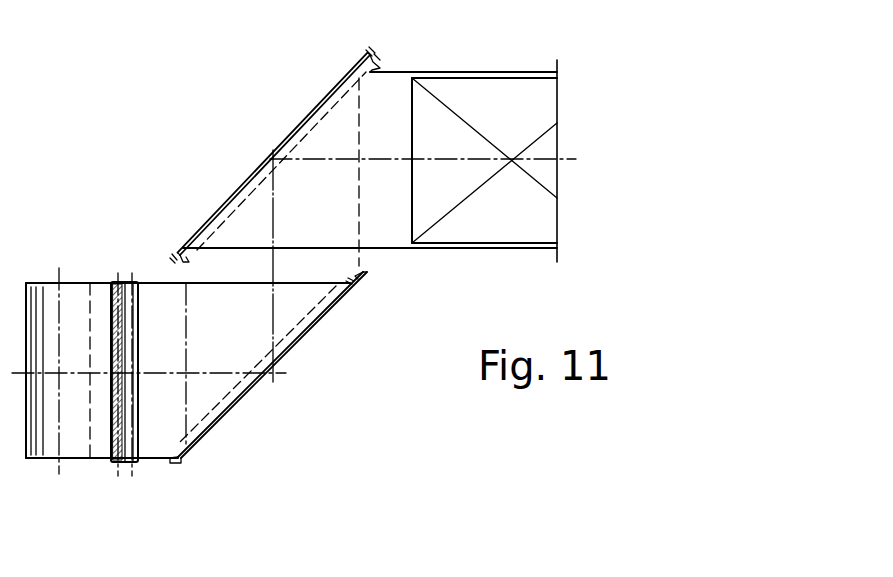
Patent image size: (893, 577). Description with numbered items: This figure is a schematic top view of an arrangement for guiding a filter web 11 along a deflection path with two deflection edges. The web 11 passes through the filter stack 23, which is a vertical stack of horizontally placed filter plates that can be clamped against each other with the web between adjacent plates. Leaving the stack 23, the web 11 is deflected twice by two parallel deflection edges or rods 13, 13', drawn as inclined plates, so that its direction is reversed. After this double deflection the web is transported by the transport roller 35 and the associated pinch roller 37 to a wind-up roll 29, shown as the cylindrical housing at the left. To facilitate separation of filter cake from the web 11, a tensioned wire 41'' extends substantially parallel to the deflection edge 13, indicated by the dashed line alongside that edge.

The filter web 11 is at (403, 72).
The deflection edge 13 is at (275, 133).
The deflection edge 13' is at (302, 367).
The filter stack 23 is at (519, 117).
The wind-up roll 29 is at (70, 287).
The transport roller 35 is at (133, 462).
The pinch roller 37 is at (113, 463).
The tensioned wire 41'' is at (281, 161).